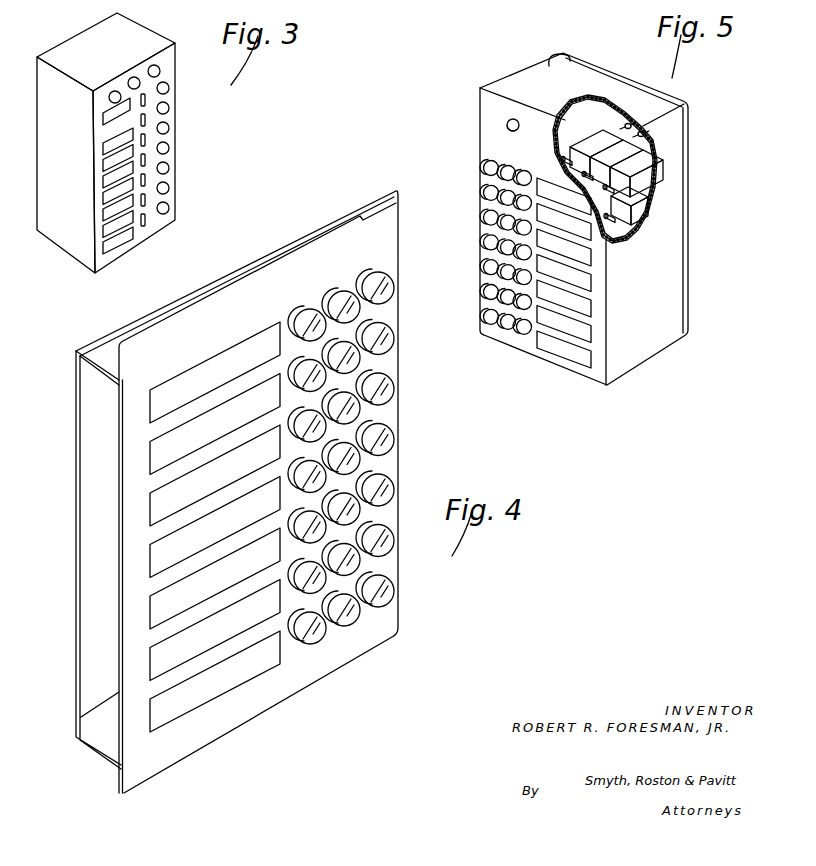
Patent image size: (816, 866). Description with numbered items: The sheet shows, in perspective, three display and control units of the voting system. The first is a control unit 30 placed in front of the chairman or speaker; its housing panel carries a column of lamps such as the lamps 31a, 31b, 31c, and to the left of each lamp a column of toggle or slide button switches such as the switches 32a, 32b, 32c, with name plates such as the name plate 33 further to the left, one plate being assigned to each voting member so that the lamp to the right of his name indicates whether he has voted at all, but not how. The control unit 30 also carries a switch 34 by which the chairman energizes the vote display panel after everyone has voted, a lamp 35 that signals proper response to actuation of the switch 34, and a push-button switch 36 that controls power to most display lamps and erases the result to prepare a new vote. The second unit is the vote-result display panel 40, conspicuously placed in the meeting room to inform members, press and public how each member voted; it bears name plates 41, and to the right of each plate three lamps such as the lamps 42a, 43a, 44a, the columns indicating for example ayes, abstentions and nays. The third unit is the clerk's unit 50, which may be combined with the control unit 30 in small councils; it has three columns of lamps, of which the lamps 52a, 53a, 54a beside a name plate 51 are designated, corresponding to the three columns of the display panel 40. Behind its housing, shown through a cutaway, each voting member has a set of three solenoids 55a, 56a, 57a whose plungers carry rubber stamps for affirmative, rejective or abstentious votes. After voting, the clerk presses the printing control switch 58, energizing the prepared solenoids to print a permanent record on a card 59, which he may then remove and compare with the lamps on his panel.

In FIG. 3, the control unit 30 is at (134, 143).
In FIG. 3, the lamp 31a is at (170, 88).
In FIG. 3, the lamp 31b is at (170, 107).
In FIG. 3, the lamp 31c is at (170, 128).
In FIG. 3, the toggle or slide button switch 32a is at (146, 93).
In FIG. 3, the toggle or slide button switch 32b is at (146, 120).
In FIG. 3, the toggle or slide button switch 32c is at (147, 141).
In FIG. 3, the name plate 33 is at (105, 137).
In FIG. 3, the switch 34 is at (154, 65).
In FIG. 3, the lamp 35 is at (133, 77).
In FIG. 3, the push-button switch 36 is at (111, 91).
In FIG. 4, the vote-result display panel 40 is at (259, 492).
In FIG. 4, the name plate 41 is at (175, 378).
In FIG. 4, the lamp 42a is at (301, 317).
In FIG. 4, the lamp 43a is at (338, 296).
In FIG. 4, the lamp 44a is at (371, 277).
In FIG. 5, the clerk's unit 50 is at (597, 212).
In FIG. 5, the name plate 51 is at (554, 178).
In FIG. 5, the lamp 52a is at (483, 166).
In FIG. 5, the lamp 53a is at (507, 165).
In FIG. 5, the lamp 54a is at (525, 170).
In FIG. 5, the solenoid 55a is at (607, 130).
In FIG. 5, the solenoid 56a is at (637, 138).
In FIG. 5, the solenoid 57a is at (643, 180).
In FIG. 5, the printing control switch 58 is at (516, 118).
In FIG. 5, the card 59 is at (556, 60).